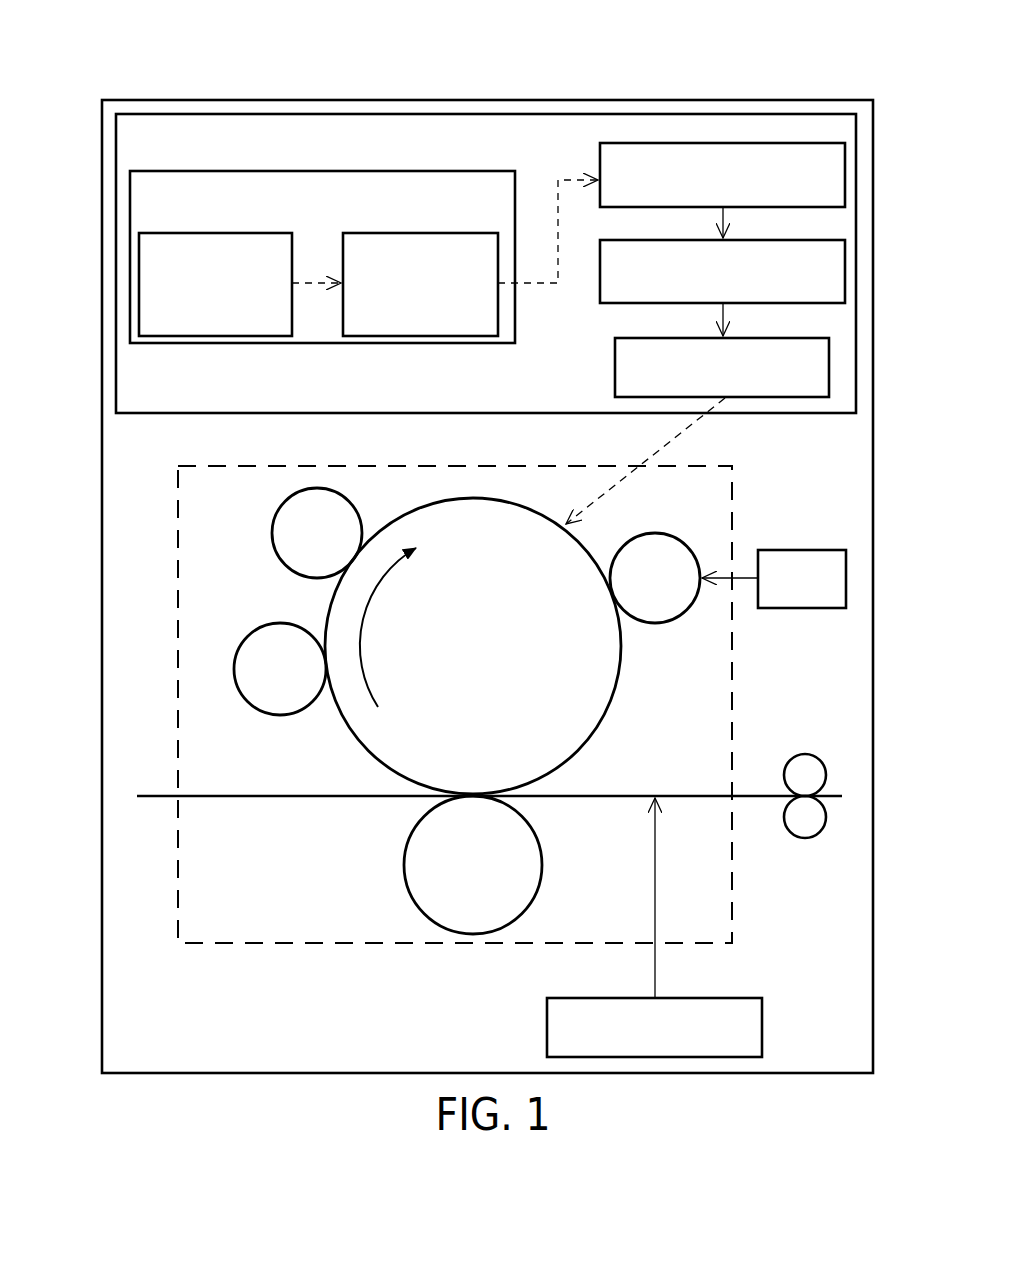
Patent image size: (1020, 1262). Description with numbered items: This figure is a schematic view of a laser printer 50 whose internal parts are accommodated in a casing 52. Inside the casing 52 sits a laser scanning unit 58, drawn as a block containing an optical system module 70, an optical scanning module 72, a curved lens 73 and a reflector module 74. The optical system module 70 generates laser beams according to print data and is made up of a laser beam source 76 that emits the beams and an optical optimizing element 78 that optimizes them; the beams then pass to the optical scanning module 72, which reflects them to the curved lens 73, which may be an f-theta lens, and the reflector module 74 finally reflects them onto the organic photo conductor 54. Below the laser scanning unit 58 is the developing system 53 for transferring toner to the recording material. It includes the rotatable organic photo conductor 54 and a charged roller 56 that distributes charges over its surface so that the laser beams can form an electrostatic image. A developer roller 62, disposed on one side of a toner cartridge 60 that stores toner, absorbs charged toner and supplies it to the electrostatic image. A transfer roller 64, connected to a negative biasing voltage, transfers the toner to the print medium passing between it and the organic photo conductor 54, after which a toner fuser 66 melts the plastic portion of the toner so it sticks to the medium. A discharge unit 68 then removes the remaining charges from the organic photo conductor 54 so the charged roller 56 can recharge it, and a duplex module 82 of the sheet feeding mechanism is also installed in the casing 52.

The printer 50 is at (800, 57).
The casing 52 is at (873, 213).
The laser scanning unit 58 is at (856, 146).
The optical system module 70 is at (130, 213).
The laser beam source 76 is at (195, 337).
The optical optimizing element 78 is at (402, 337).
The optical scanning module 72 is at (845, 181).
The curved lens 73 is at (845, 267).
The reflector module 74 is at (829, 370).
The developing system 53 is at (215, 465).
The organic photo conductor 54 is at (465, 498).
The charged roller 56 is at (320, 500).
The discharge unit 68 is at (243, 640).
The developer roller 62 is at (658, 533).
The toner cartridge 60 is at (797, 550).
The transfer roller 64 is at (543, 855).
The toner fuser 66 is at (809, 746).
The duplex module 82 is at (728, 998).